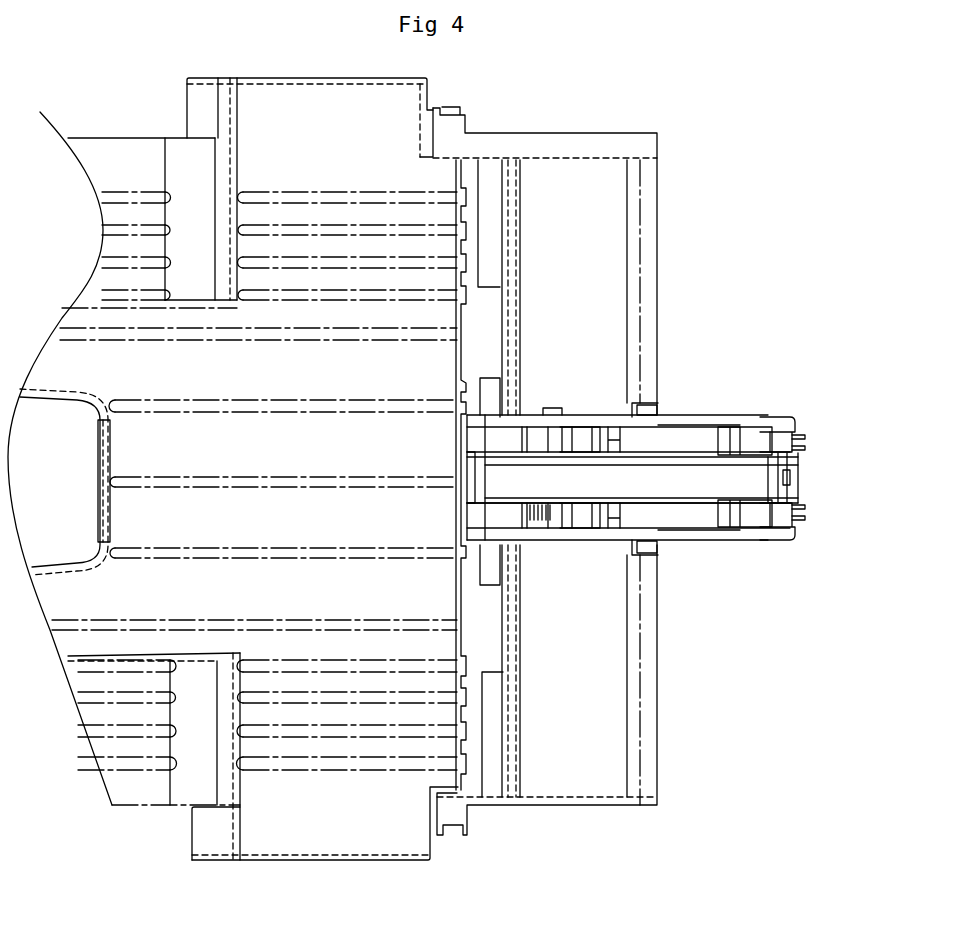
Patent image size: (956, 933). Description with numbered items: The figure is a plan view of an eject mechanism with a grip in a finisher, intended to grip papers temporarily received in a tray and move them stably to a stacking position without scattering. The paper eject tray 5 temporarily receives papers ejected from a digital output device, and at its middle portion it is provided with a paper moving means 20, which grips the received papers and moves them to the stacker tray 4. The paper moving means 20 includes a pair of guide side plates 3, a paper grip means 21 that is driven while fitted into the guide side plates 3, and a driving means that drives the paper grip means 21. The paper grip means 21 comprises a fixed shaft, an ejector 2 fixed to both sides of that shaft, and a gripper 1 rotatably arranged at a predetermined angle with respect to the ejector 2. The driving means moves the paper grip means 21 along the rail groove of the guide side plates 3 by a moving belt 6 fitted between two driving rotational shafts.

The terminal pins 1 is at (803, 443).
The ring elements 2 is at (750, 447).
The bearings 3 is at (588, 415).
The stator 4 is at (187, 777).
The housing 5 is at (608, 232).
The connector body 6 is at (547, 483).
The shaft 20 is at (673, 480).
The connector end 21 is at (787, 412).